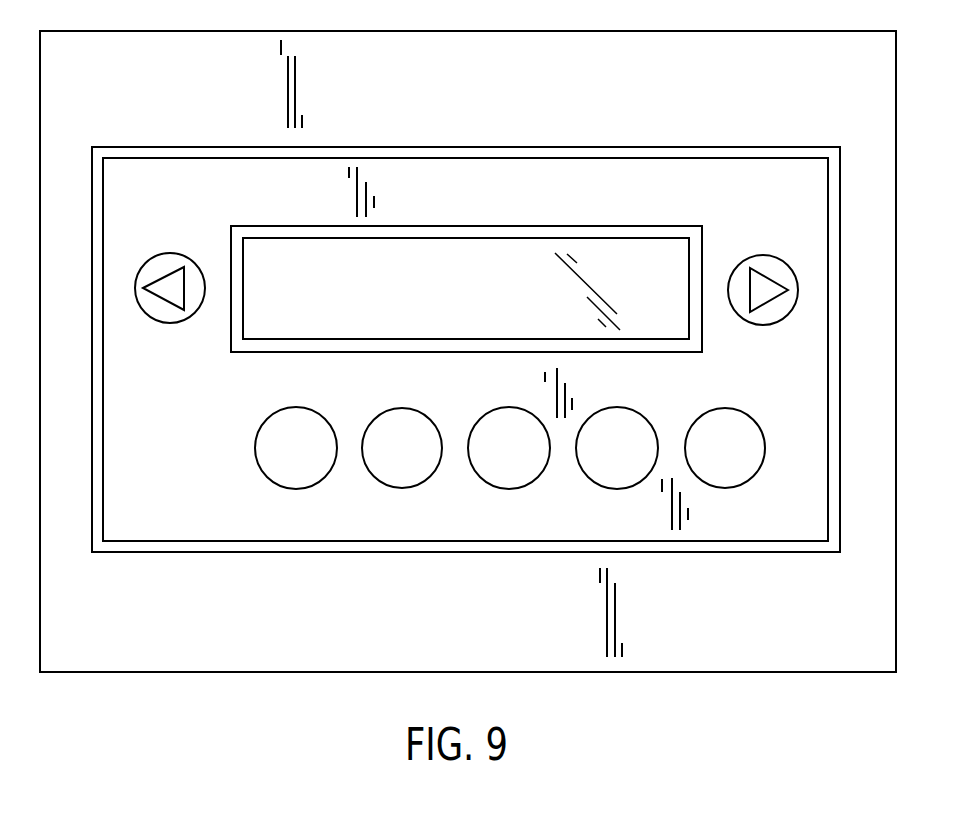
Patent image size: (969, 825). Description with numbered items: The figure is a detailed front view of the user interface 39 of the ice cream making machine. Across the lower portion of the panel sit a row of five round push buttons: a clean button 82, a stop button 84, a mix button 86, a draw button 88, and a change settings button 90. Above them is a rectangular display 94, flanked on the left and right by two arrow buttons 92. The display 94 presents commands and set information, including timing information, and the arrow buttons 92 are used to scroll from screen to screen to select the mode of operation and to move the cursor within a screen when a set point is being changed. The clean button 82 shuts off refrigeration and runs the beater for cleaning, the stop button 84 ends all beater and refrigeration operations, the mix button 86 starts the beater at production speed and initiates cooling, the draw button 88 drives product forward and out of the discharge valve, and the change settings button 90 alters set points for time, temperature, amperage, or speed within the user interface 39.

The user interface 39 is at (470, 530).
The clean button 82 is at (295, 407).
The stop button 84 is at (401, 408).
The mix button 86 is at (509, 407).
The draw button 88 is at (617, 407).
The change settings button 90 is at (723, 408).
The arrow buttons 92 is at (170, 252).
The display 94 is at (265, 353).